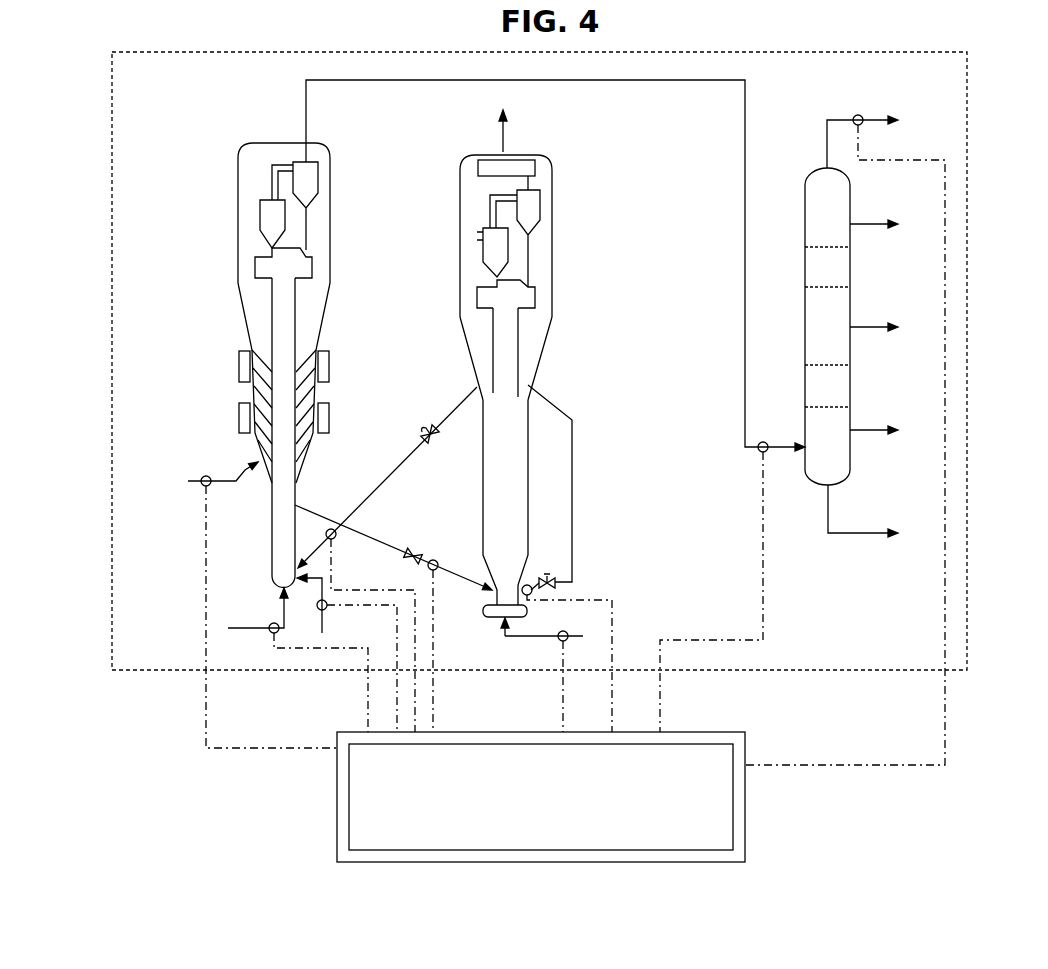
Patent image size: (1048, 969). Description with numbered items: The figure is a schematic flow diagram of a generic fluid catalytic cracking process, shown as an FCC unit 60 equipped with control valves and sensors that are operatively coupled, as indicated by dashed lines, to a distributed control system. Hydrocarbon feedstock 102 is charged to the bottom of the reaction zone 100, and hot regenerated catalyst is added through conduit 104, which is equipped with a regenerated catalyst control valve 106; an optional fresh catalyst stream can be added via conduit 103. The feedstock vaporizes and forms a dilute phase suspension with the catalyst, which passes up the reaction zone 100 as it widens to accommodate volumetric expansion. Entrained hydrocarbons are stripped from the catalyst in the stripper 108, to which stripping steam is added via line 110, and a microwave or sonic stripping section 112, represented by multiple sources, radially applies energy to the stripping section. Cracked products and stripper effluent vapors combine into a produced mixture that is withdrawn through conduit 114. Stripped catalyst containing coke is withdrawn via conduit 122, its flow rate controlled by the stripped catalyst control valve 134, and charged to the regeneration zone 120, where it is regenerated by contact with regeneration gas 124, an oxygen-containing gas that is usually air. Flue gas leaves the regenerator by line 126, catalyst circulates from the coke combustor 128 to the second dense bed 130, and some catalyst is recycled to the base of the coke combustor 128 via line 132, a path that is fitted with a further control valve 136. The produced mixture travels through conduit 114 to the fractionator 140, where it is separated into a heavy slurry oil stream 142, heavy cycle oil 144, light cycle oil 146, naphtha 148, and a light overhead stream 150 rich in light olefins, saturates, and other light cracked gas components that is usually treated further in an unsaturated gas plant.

The FCC unit 60 is at (967, 163).
The reaction zone 100 is at (210, 200).
The hydrocarbon feedstock 102 is at (266, 625).
The conduit 103 is at (325, 622).
The conduit 104 is at (383, 482).
The regenerated catalyst control valve 106 is at (434, 439).
The stripper 108 is at (746, 734).
The line 110 is at (223, 472).
The microwave or sonic stripping section 112 is at (239, 365).
The conduit 114 is at (416, 80).
The regeneration zone 120 is at (566, 210).
The conduit 122 is at (468, 578).
The regeneration gas 124 is at (512, 638).
The line 126 is at (520, 131).
The coke combustor 128 is at (492, 610).
The second dense bed 130 is at (548, 345).
The line 132 is at (574, 479).
The stripped catalyst control valve 134 is at (415, 550).
The control valve 136 is at (542, 575).
The fractionator 140 is at (847, 229).
The heavy slurry oil stream 142 is at (879, 533).
The heavy cycle oil 144 is at (881, 430).
The light cycle oil 146 is at (889, 327).
The naphtha 148 is at (874, 215).
The light overhead stream 150 is at (880, 117).